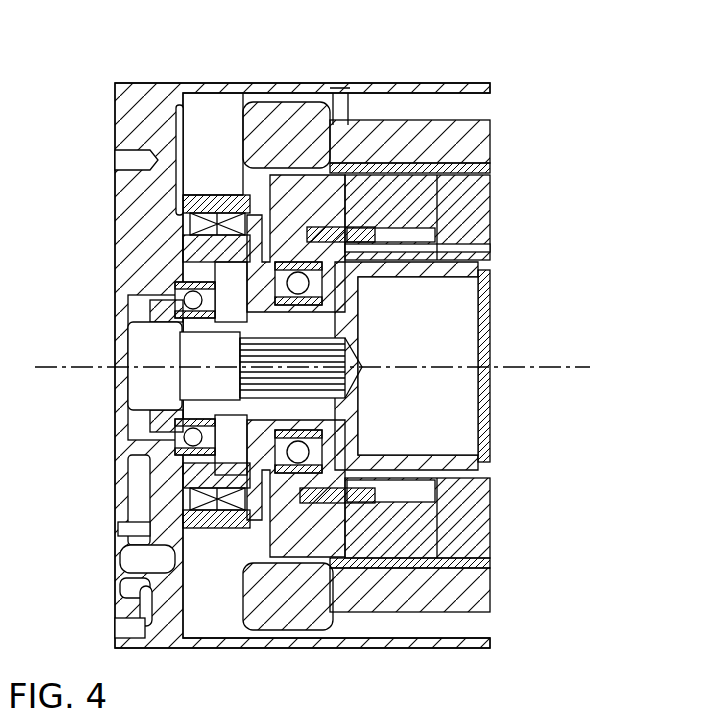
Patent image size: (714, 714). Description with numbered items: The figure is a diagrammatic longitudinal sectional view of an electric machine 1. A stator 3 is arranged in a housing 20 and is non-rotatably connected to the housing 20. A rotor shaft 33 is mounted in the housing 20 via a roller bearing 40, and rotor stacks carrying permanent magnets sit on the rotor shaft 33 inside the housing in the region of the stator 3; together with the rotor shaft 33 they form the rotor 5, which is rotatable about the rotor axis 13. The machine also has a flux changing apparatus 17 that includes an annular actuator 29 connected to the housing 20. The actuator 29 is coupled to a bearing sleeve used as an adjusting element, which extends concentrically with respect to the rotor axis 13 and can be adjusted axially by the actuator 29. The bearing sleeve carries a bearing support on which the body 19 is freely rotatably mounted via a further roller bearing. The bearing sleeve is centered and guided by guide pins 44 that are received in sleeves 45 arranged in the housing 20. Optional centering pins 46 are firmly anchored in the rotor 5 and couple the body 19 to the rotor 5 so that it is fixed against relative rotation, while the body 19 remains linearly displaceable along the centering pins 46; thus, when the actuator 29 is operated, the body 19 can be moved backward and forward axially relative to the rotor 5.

The electric machine 1 is at (145, 70).
The stator 3 is at (268, 127).
The rotor 5 is at (465, 300).
The rotor axis 13 is at (529, 367).
The flux changing apparatus 17 is at (170, 134).
The body 19 is at (305, 195).
The housing 20 is at (125, 99).
The annular actuator 29 is at (183, 222).
The rotor shaft 33 is at (147, 326).
The roller bearing 40 is at (185, 295).
The guide pins 44 is at (208, 255).
The sleeves 45 is at (188, 475).
The centering pins 46 is at (355, 230).